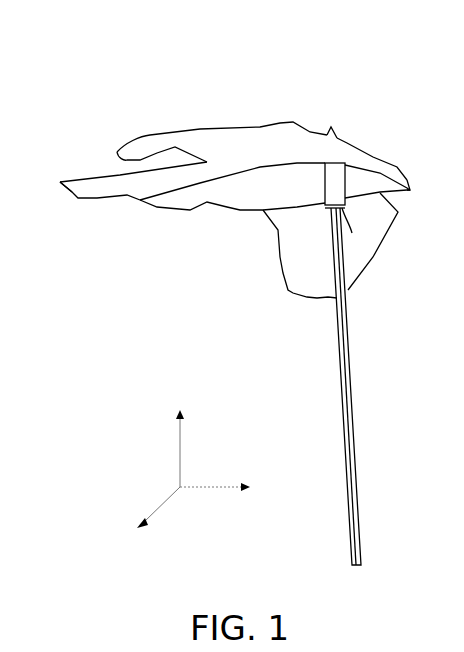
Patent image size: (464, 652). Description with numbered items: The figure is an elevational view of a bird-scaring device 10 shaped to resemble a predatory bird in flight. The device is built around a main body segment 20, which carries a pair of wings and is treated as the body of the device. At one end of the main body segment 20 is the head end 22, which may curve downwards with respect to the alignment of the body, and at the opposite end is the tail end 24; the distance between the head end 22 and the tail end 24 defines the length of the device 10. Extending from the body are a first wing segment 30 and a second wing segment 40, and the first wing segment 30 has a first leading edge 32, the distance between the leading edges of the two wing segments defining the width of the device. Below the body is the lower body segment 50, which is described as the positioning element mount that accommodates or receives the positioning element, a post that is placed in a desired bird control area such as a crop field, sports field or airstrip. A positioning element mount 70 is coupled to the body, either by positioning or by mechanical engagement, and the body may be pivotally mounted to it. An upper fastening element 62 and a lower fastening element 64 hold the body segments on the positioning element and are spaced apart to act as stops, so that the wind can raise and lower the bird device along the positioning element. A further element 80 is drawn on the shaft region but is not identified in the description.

The bird-scaring device 10 is at (153, 91).
The main body segment 20 is at (369, 136).
The head end 22 is at (413, 187).
The tail end 24 is at (72, 195).
The first wing segment 30 is at (250, 125).
The first leading edge 32 is at (452, 237).
The second wing segment 40 is at (373, 257).
The lower body segment 50 is at (238, 210).
The upper fastening element 62 is at (330, 127).
The lower fastening element 64 is at (352, 233).
The positioning element mount 70 is at (330, 177).
The shaft 80 is at (343, 300).